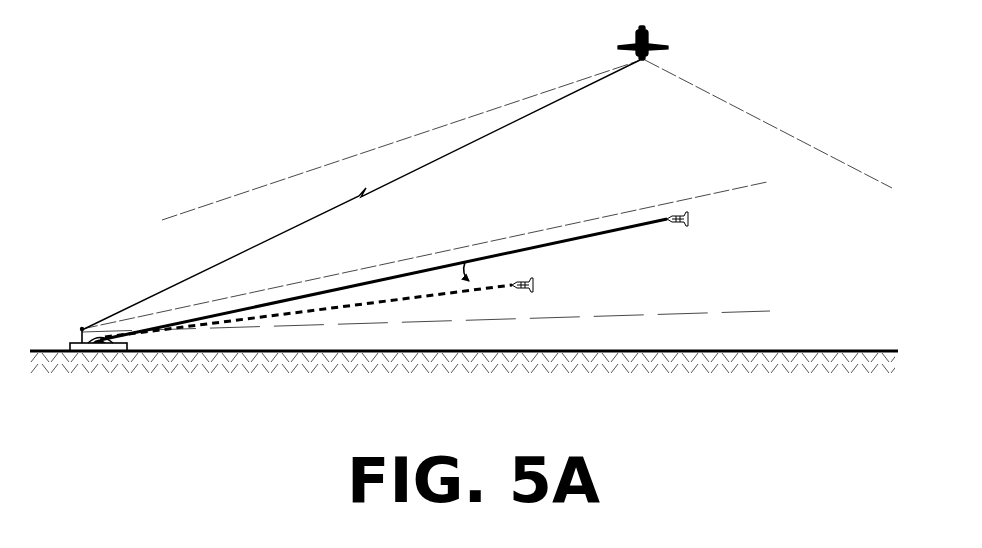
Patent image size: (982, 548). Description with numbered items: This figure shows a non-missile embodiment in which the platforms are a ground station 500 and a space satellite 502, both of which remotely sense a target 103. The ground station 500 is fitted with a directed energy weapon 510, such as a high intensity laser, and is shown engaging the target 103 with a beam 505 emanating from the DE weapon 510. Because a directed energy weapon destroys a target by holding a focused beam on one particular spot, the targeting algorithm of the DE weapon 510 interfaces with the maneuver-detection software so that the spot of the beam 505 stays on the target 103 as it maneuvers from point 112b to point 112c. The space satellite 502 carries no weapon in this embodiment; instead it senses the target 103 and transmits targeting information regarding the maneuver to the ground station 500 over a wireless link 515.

The ground station 500 is at (70, 345).
The DE weapon 510 is at (95, 338).
The space satellite 502 is at (651, 31).
The wireless link 515 is at (512, 128).
The target 103 is at (664, 216).
The beam 505 is at (520, 255).
The point 112b is at (678, 231).
The point 112c is at (524, 296).